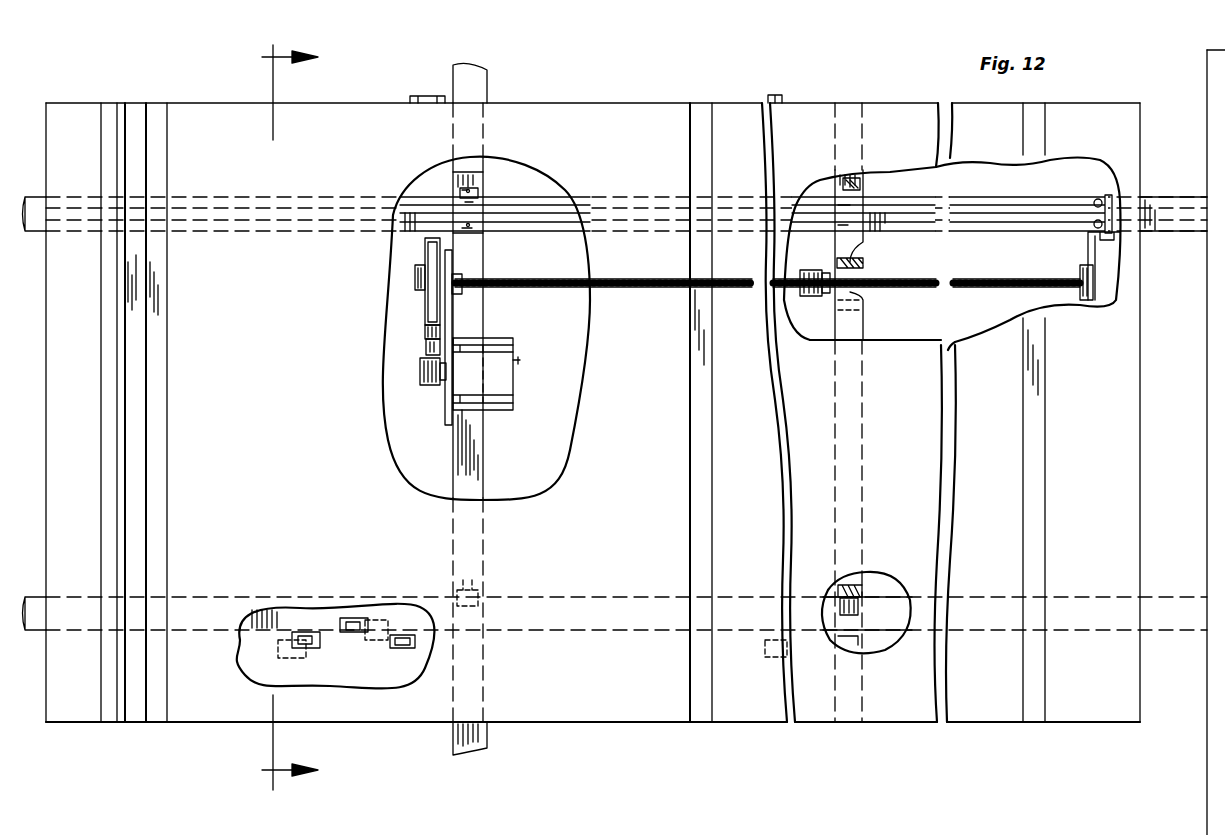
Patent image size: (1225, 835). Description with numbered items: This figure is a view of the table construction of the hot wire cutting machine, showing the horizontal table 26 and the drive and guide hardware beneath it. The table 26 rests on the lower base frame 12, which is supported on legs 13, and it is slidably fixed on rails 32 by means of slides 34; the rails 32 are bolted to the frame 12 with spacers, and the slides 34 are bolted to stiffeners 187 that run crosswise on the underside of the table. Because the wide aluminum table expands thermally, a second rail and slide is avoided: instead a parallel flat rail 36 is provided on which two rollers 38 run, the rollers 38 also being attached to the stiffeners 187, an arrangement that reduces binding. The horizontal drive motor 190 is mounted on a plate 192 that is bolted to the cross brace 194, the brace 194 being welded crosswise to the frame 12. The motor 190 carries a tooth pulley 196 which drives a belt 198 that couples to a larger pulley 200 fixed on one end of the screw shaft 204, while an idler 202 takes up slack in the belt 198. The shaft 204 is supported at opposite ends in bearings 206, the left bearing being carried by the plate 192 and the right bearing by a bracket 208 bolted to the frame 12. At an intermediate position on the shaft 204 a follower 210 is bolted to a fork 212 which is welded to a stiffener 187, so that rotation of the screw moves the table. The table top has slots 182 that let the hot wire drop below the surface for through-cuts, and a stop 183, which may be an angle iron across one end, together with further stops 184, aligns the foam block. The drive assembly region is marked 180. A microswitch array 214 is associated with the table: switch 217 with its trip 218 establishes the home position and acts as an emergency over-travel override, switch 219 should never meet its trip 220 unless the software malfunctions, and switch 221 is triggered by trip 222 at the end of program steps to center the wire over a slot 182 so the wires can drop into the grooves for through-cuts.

The lower base frame 12 is at (1207, 78).
The legs 13 is at (303, 417).
The horizontal table 26 is at (570, 103).
The rails 32 is at (528, 218).
The slides 34 is at (485, 196).
The parallel flat rail 36 is at (886, 622).
The rollers 38 is at (490, 605).
The drive assembly 180 is at (625, 490).
The slots 182 is at (167, 458).
The stop 183 is at (125, 415).
The stops 184 is at (430, 96).
The stiffeners 187 is at (470, 195).
The horizontal drive motor 190 is at (505, 396).
The plate 192 is at (447, 405).
The cross brace 194 is at (480, 455).
The tooth pulley 196 is at (420, 372).
The belt 198 is at (425, 333).
The pulley 200 is at (425, 305).
The idler 202 is at (427, 350).
The screw shaft 204 is at (560, 283).
The bearings 206 is at (462, 290).
The bracket 208 is at (1086, 250).
The follower 210 is at (808, 297).
The fork 212 is at (863, 264).
The microswitch array 214 is at (365, 660).
The switch 217 is at (310, 650).
The trip 218 is at (278, 650).
The switch 219 is at (406, 650).
The trip 220 is at (775, 657).
The switch 221 is at (352, 618).
The trip 222 is at (388, 620).